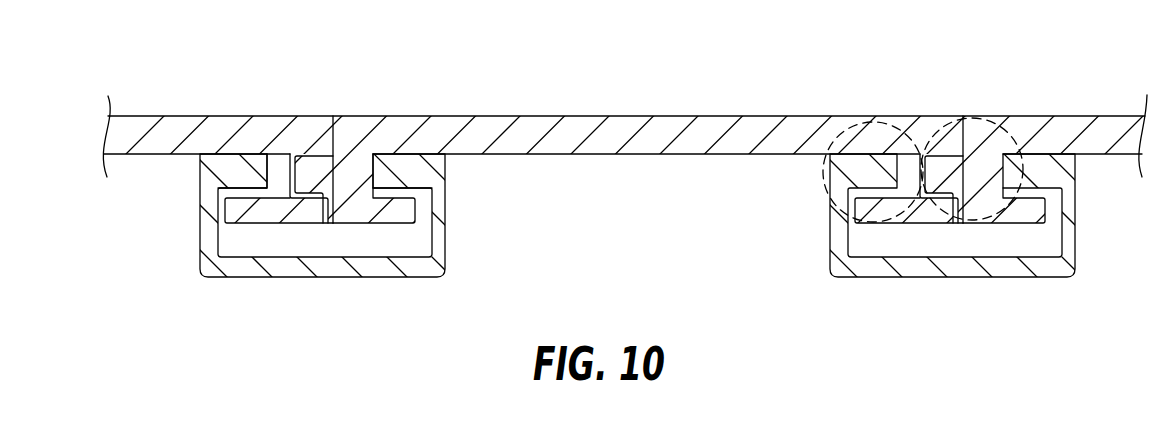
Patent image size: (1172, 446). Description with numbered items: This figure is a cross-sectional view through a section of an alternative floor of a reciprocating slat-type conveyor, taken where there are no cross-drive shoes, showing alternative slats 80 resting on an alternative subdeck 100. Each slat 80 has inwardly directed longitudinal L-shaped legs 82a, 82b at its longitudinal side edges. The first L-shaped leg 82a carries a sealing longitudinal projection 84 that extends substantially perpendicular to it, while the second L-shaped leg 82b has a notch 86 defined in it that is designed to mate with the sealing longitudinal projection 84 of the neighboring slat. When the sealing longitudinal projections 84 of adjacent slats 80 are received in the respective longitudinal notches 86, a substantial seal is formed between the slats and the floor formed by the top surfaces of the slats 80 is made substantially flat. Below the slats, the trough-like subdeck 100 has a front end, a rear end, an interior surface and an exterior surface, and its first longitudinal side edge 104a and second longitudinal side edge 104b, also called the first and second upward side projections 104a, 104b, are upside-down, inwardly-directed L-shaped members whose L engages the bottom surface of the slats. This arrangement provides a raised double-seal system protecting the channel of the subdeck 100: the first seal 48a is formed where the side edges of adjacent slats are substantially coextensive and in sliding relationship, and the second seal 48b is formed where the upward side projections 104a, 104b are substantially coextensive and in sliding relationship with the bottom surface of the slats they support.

The slat 80 is at (577, 124).
The sealing longitudinal projection 84 is at (308, 173).
The notch 86 is at (290, 193).
The first L-shaped leg 82a is at (368, 220).
The second L-shaped leg 82b is at (277, 220).
The subdeck 100 is at (447, 228).
The first longitudinal side edge 104a is at (445, 168).
The second longitudinal side edge 104b is at (222, 168).
The first seal 48a is at (985, 125).
The second seal 48b is at (847, 218).